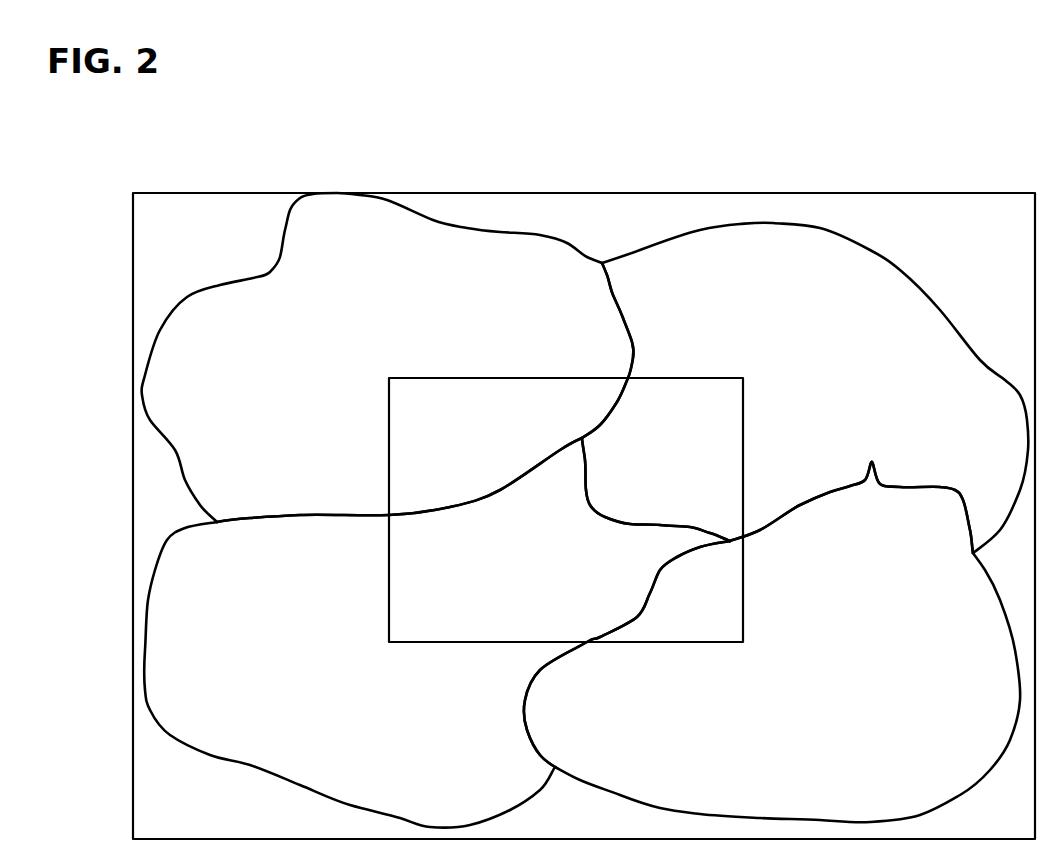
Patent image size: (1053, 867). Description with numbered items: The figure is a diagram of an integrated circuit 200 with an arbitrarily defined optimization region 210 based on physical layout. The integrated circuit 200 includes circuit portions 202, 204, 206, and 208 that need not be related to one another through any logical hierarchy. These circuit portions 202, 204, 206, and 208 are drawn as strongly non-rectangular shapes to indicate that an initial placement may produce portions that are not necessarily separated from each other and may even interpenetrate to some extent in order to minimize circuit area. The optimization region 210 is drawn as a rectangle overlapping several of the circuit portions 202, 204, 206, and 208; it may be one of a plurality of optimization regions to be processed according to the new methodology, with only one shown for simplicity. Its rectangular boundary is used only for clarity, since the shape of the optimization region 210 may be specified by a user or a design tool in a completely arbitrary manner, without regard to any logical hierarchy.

The integrated circuit 200 is at (616, 169).
The circuit portion 202 is at (178, 452).
The circuit portion 204 is at (698, 233).
The circuit portion 206 is at (675, 808).
The circuit portion 208 is at (215, 757).
The optimization region 210 is at (412, 378).